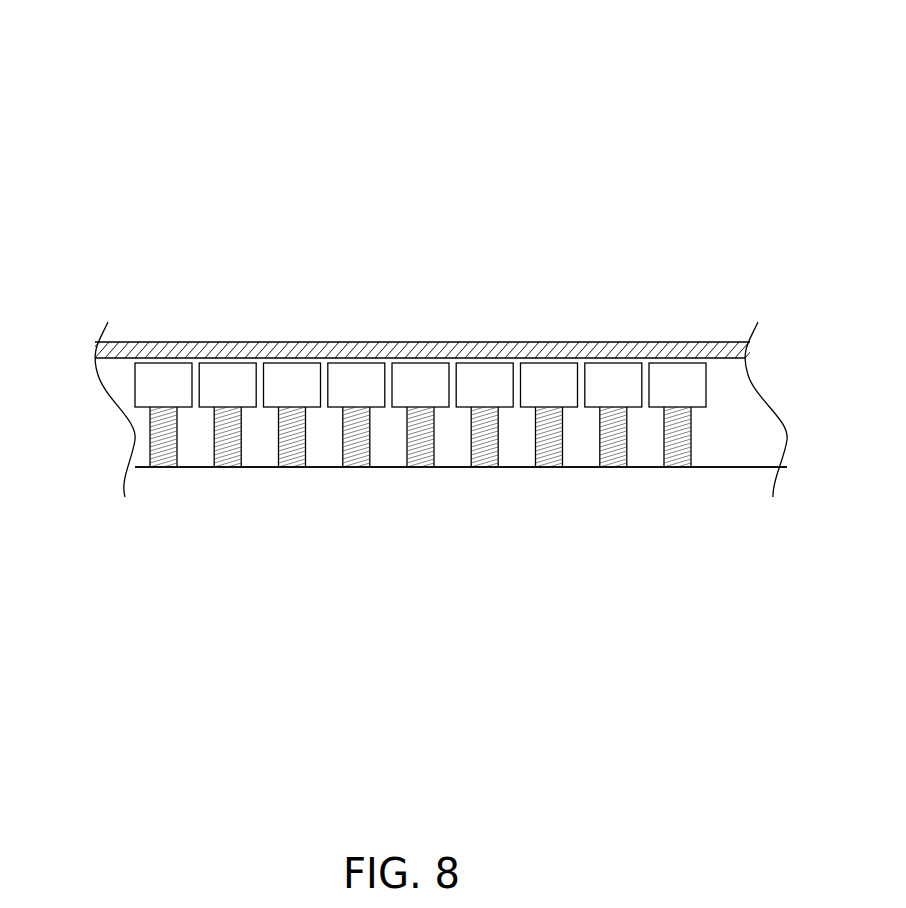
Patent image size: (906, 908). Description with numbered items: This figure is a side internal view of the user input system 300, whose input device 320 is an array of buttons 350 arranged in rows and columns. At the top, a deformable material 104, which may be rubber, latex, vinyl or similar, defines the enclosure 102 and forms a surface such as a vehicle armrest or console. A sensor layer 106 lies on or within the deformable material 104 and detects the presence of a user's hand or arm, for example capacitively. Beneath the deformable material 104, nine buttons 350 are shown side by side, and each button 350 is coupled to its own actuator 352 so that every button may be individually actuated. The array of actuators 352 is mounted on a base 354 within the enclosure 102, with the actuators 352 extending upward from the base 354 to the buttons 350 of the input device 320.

The user input system 300 is at (412, 276).
The enclosure 102 is at (464, 429).
The deformable material 104 is at (157, 348).
The sensor layer 106 is at (238, 342).
The input device 320 is at (80, 434).
The buttons 350 is at (677, 368).
The actuators 352 is at (677, 460).
The base 354 is at (147, 468).